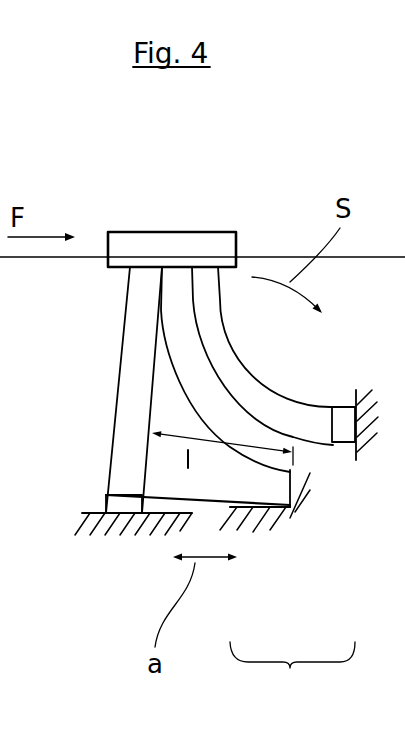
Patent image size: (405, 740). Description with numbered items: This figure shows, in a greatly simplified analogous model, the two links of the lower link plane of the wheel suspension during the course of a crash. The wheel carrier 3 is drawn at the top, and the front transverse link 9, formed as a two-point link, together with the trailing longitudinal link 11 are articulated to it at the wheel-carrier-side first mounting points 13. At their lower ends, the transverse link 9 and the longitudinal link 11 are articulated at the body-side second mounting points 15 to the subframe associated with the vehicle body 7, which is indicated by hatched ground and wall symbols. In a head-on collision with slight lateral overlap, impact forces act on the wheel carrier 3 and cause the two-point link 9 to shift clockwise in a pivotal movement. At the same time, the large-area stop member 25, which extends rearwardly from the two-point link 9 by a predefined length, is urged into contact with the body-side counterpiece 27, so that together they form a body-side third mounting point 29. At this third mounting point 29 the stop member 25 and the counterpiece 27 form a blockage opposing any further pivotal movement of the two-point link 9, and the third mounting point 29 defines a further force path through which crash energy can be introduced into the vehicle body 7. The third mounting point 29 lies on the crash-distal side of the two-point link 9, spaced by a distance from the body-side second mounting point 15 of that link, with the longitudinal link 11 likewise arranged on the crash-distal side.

The wheel carrier 3 is at (108, 232).
The wheel-carrier-side first mounting points 13 is at (152, 267).
The front transverse link 9 is at (138, 372).
The longitudinal link 11 is at (262, 397).
The body-side second mounting points 15 is at (123, 513).
The vehicle body 7 is at (92, 513).
The body-side counterpiece 27 is at (263, 483).
The stop member 25 is at (270, 512).
The body-side third mounting point 29 is at (292, 671).